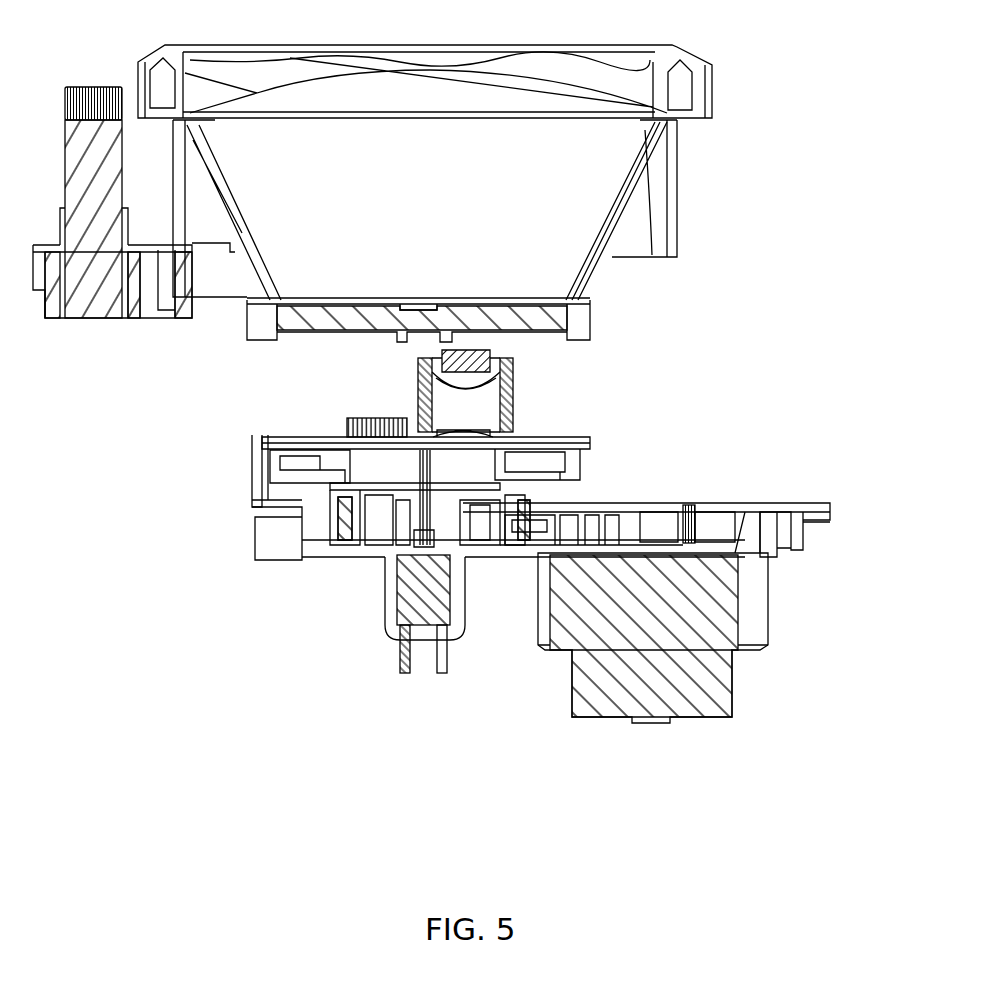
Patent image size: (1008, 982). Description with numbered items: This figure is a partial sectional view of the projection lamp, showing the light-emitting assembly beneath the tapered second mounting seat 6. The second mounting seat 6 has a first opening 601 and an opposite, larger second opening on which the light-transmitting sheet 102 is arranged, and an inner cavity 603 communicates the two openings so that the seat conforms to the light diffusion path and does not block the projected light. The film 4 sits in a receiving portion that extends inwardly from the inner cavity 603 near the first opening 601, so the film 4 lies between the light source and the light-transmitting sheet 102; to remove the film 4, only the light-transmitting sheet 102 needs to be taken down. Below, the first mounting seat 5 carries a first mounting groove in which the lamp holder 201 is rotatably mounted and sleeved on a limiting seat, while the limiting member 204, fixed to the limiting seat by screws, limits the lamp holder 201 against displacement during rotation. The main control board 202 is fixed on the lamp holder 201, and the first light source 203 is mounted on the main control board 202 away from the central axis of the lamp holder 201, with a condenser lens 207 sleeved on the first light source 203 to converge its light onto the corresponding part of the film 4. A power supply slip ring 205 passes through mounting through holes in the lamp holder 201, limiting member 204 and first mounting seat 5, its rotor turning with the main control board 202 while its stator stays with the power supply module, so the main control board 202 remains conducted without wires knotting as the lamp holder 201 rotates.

The light-transmitting sheet 102 is at (664, 80).
The second mounting seat 6 is at (653, 163).
The inner cavity 603 is at (612, 213).
The first opening 601 is at (592, 291).
The film 4 is at (587, 314).
The condenser lens 207 is at (535, 376).
The first light source 203 is at (520, 426).
The main control board 202 is at (562, 439).
The lamp holder 201 is at (606, 457).
The limiting member 204 is at (331, 493).
The first mounting seat 5 is at (231, 500).
The power supply slip ring 205 is at (377, 571).